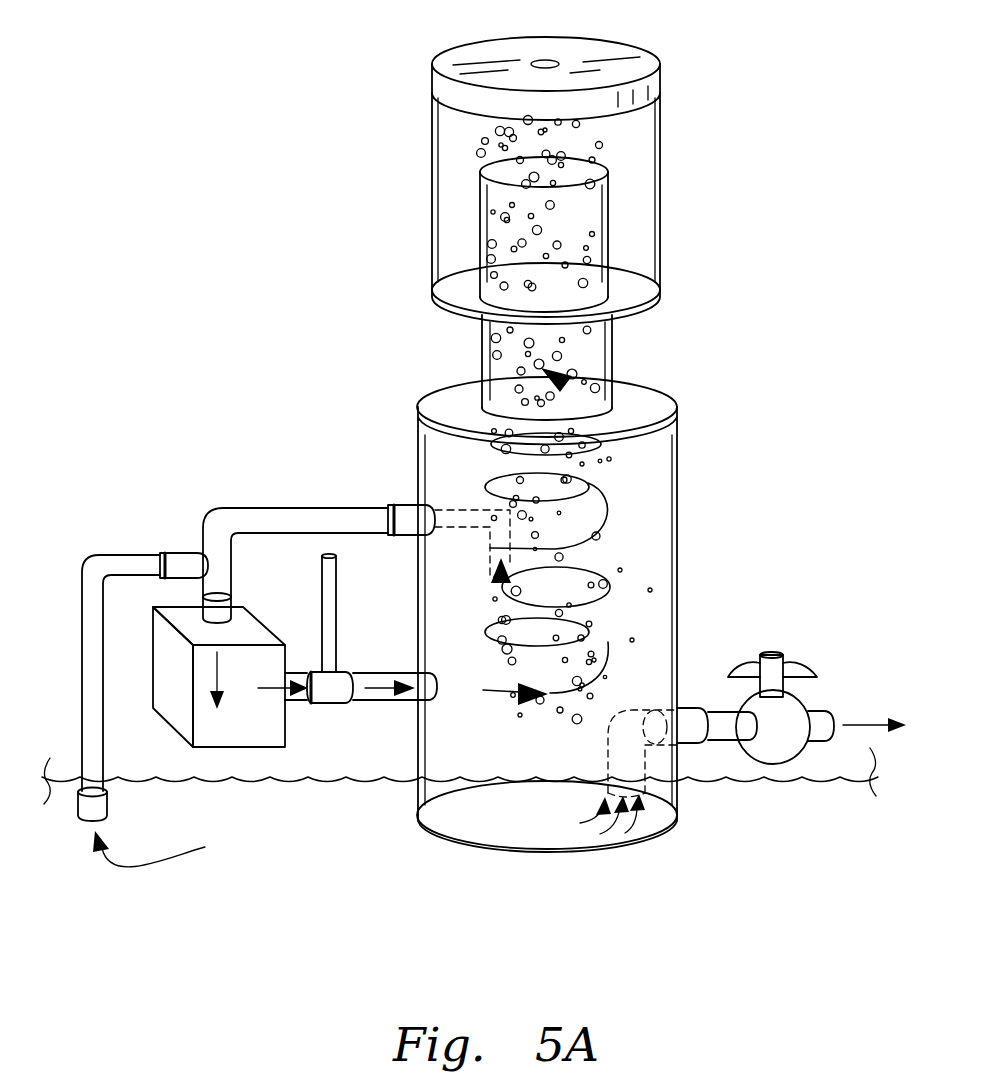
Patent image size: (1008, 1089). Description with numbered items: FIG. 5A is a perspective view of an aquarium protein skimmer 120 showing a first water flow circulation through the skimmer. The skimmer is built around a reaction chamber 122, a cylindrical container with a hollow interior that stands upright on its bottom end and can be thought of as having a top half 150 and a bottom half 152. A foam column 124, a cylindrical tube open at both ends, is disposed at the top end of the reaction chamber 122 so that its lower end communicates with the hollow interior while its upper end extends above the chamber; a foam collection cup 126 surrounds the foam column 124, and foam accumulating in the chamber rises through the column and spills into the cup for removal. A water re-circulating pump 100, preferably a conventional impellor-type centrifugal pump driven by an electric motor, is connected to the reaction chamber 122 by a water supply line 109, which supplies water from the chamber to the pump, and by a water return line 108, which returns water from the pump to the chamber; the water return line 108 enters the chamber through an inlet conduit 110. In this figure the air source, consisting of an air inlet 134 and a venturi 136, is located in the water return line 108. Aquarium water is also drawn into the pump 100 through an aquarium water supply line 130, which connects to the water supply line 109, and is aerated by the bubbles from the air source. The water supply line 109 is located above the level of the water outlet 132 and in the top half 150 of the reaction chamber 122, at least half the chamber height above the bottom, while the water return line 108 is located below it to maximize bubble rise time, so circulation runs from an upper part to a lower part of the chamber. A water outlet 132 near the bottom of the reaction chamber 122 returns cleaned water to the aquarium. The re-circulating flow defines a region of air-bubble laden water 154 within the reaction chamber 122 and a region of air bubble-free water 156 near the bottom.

The water re-circulating pump 100 is at (167, 660).
The water return line 108 is at (371, 673).
The water supply line 109 is at (328, 507).
The inlet conduit inside chamber 110 is at (460, 507).
The protein skimmer 120 is at (735, 95).
The reaction chamber 122 is at (680, 525).
The foam column 124 is at (612, 362).
The foam collection cup 126 is at (662, 240).
The aquarium water supply line 130 is at (80, 660).
The water outlet 132 is at (693, 708).
The air inlet 134 is at (322, 612).
The venturi 136 is at (330, 705).
The top half 150 is at (648, 482).
The bottom half 152 is at (485, 753).
The region of air-bubble laden water 154 is at (548, 591).
The region of air bubble-free water 156 is at (540, 820).